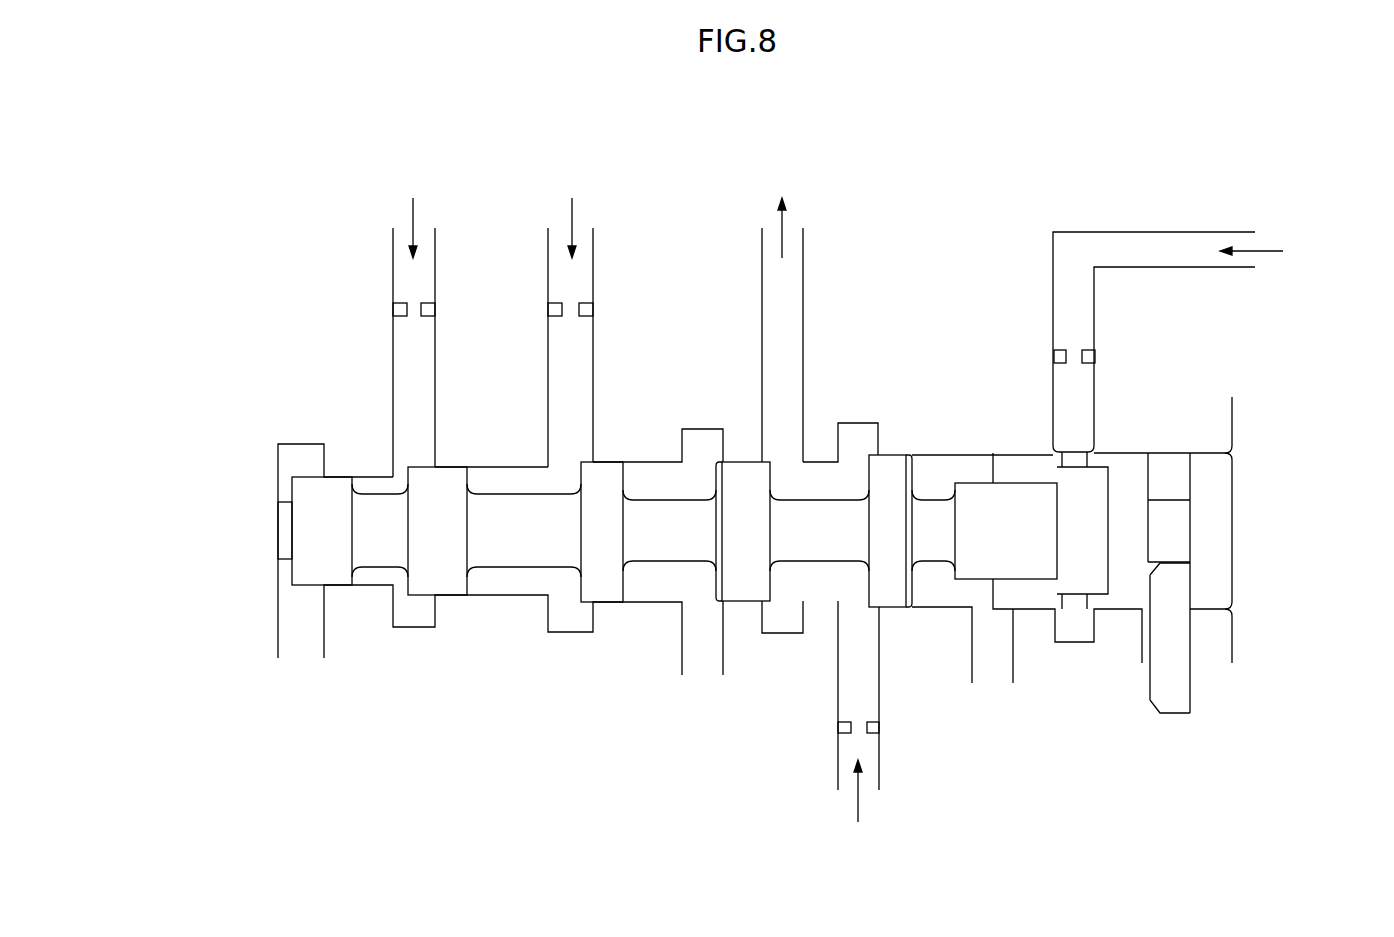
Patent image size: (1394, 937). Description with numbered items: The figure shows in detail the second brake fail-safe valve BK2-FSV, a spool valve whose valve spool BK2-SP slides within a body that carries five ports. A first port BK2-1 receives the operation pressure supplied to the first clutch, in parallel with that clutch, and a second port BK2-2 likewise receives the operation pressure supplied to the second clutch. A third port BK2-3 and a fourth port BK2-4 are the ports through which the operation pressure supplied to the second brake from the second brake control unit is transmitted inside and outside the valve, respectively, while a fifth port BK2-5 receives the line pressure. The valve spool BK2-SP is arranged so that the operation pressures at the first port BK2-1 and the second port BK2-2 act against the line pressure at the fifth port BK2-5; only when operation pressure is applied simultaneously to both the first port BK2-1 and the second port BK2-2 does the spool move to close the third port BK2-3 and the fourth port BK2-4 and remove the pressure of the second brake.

The second brake fail-safe valve BK2-FSV is at (272, 552).
The valve spool BK2-SP is at (888, 473).
The first port BK2-1 is at (414, 398).
The second port BK2-2 is at (570, 398).
The third port BK2-3 is at (860, 632).
The fourth port BK2-4 is at (778, 398).
The fifth port BK2-5 is at (1075, 398).